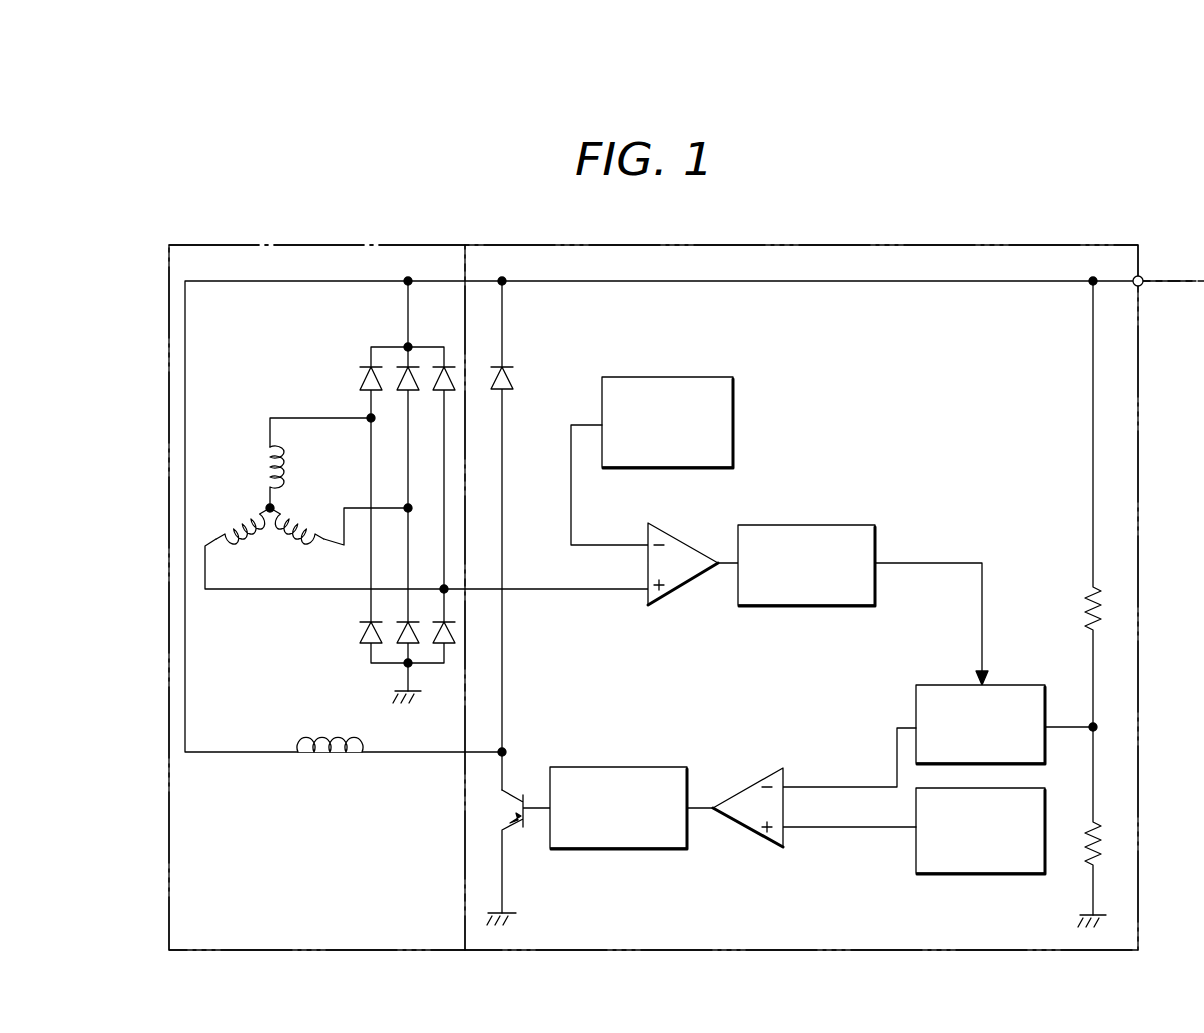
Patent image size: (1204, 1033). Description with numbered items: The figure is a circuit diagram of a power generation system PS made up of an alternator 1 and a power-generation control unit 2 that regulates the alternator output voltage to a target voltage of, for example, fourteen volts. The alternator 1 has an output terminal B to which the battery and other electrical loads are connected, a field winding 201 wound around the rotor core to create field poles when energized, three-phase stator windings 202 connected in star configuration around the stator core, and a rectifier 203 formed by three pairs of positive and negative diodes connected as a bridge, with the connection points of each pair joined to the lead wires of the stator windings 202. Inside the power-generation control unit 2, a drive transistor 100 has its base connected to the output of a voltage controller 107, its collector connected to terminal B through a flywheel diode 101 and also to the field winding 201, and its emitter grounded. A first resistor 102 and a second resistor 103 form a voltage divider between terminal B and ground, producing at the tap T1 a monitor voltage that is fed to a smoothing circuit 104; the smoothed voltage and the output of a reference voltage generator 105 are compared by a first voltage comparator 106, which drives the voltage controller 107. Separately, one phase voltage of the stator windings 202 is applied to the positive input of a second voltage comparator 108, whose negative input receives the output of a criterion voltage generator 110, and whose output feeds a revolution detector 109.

The alternator 1 is at (212, 258).
The power-generation control unit 2 is at (855, 402).
The power generation system PS is at (850, 245).
The terminal B is at (1146, 294).
The tap T1 is at (1097, 727).
The drive transistor 100 is at (518, 827).
The flywheel diode 101 is at (511, 366).
The first resistor 102 is at (1085, 607).
The second resistor 103 is at (1083, 854).
The smoothing circuit 104 is at (938, 685).
The reference voltage generator 105 is at (945, 873).
The first voltage comparator 106 is at (750, 786).
The voltage controller 107 is at (617, 767).
The second voltage comparator 108 is at (683, 540).
The revolution detector 109 is at (818, 525).
The criterion voltage generator 110 is at (670, 377).
The field winding 201 is at (332, 762).
The three-phase stator windings 202 is at (254, 492).
The rectifier 203 is at (383, 347).